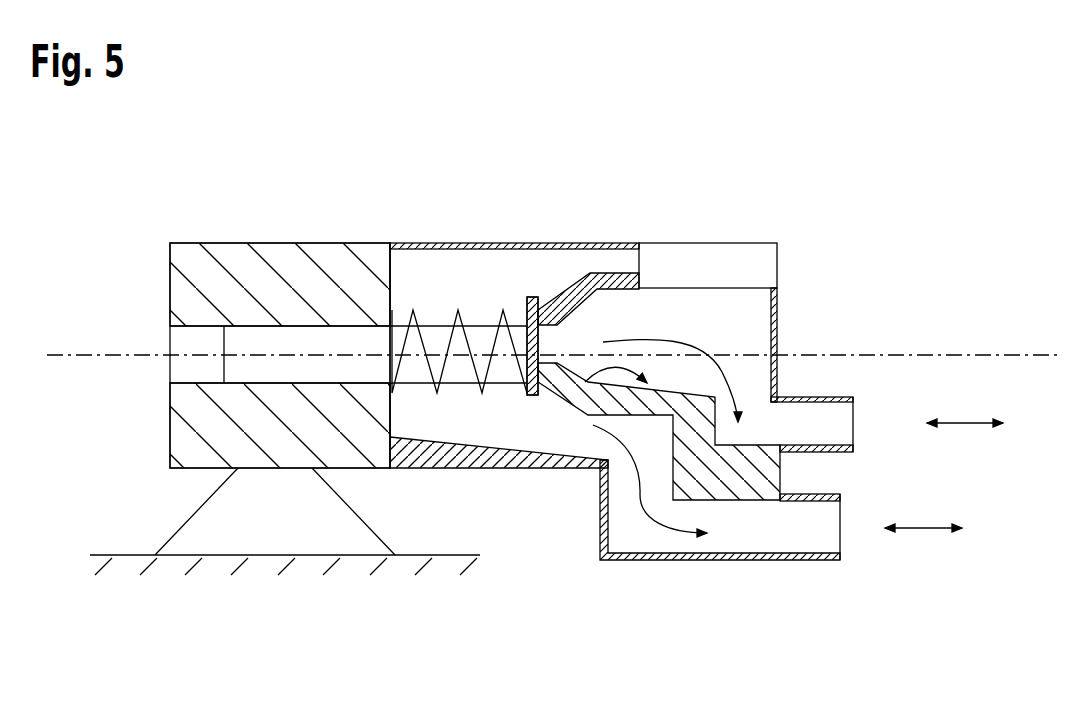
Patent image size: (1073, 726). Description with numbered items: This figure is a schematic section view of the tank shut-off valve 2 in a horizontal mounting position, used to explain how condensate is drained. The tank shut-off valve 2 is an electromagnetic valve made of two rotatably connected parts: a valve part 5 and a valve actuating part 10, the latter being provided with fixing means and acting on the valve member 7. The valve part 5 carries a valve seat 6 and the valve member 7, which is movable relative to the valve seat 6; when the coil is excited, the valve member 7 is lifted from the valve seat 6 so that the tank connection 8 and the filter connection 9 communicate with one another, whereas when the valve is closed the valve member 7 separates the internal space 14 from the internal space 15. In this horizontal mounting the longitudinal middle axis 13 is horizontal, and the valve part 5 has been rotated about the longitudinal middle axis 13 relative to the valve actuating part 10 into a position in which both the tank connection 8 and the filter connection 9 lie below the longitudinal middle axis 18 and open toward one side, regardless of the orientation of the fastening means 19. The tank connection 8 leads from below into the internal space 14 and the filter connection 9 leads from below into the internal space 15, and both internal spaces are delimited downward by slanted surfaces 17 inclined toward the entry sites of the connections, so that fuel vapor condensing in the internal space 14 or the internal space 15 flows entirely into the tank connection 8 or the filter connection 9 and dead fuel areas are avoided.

The tank shut-off valve 2 is at (437, 215).
The valve part 5 is at (642, 215).
The valve seat 6 is at (541, 310).
The valve member 7 is at (527, 297).
The tank connection 8 is at (830, 412).
The filter connection 9 is at (793, 525).
The valve actuating part 10 is at (283, 232).
The longitudinal middle axis 13 is at (90, 353).
The internal space 14 is at (712, 318).
The internal space 15 is at (535, 422).
The slanted surfaces 17 is at (444, 441).
The longitudinal middle axis 18 is at (1000, 355).
The fastening means 19 is at (203, 523).